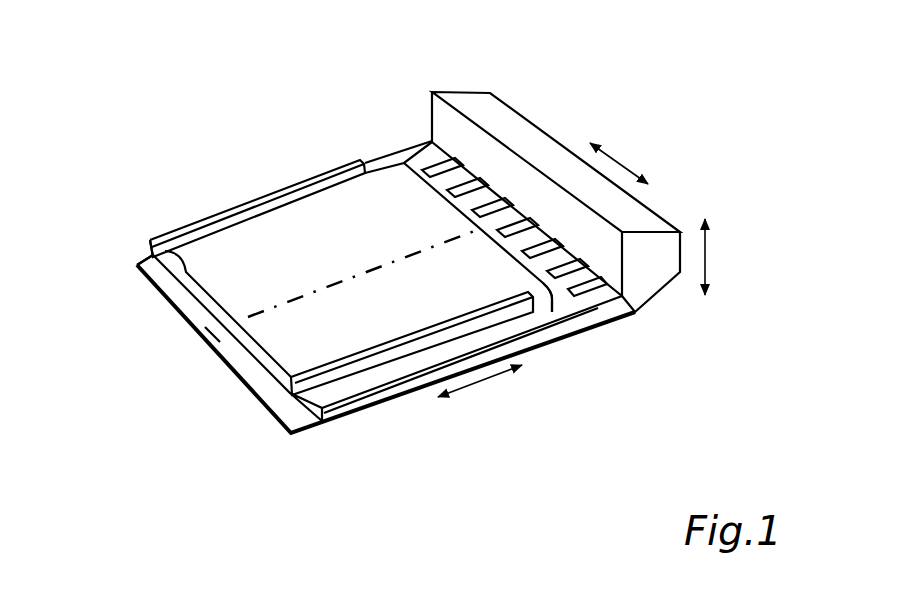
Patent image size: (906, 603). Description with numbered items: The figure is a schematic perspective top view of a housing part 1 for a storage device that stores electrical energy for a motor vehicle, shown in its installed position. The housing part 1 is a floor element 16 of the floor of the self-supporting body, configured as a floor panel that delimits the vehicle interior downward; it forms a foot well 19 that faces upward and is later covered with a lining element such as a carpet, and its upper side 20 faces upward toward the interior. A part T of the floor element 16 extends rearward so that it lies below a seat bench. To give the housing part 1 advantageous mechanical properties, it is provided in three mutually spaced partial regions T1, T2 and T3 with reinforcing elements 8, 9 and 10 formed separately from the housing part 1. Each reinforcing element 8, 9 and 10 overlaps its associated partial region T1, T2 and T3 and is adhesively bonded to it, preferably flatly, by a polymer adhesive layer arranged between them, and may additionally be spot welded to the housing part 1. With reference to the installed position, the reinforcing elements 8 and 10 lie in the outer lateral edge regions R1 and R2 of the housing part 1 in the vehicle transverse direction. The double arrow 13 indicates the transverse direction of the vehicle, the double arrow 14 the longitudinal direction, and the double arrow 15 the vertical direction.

The housing part 1 is at (506, 132).
The reinforcing element 8 is at (370, 384).
The reinforcing element 9 is at (260, 380).
The reinforcing element 10 is at (213, 233).
The double arrow 13 is at (617, 153).
The double arrow 14 is at (483, 387).
The double arrow 15 is at (707, 258).
The floor element 16 is at (554, 311).
The foot well 19 is at (315, 224).
The upper side 20 is at (411, 186).
The part of the floor element T is at (553, 167).
The partial region T1 is at (310, 421).
The partial region T2 is at (212, 353).
The partial region T3 is at (150, 267).
The outer lateral edge region R1 is at (275, 426).
The outer lateral edge region R2 is at (146, 243).